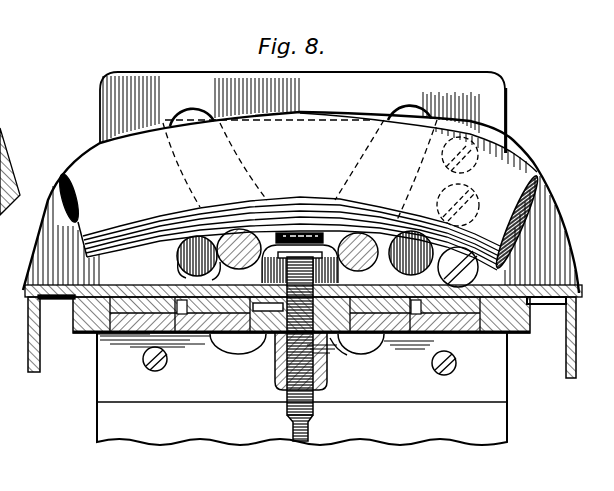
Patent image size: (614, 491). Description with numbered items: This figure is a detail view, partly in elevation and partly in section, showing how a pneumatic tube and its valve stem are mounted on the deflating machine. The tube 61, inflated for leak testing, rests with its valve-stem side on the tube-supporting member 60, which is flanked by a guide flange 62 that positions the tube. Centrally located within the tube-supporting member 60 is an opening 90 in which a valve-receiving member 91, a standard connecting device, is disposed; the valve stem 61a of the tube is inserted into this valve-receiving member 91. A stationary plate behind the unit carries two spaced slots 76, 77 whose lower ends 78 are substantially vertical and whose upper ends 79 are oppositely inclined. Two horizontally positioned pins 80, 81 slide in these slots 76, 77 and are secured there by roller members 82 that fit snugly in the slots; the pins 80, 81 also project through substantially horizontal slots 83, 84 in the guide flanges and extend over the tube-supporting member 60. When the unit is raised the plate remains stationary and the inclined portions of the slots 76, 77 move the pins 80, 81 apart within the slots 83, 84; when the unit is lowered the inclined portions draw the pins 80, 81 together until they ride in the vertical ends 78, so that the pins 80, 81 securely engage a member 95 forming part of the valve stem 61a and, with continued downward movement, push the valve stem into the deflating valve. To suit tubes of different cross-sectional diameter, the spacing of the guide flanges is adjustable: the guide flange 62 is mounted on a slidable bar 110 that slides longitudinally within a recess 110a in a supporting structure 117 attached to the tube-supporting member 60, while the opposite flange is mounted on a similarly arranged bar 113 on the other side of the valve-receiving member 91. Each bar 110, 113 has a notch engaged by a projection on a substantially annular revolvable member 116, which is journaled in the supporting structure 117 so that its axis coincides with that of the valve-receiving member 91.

The tube-supporting member 60 is at (490, 293).
The tube 61 is at (517, 182).
The valve stem 61a is at (317, 408).
The guide flange 62 is at (510, 162).
The slot 76 is at (205, 110).
The slot 77 is at (434, 112).
The lower end of slot 78 is at (237, 354).
The upper end of slot 79 is at (248, 163).
The pin 80 is at (197, 256).
The pin 81 is at (411, 253).
The roller member 82 is at (208, 270).
The slot 83 is at (176, 260).
The slot 84 is at (452, 270).
The opening 90 is at (347, 355).
The valve-receiving member 91 is at (282, 378).
The member of valve stem 95 is at (300, 232).
The slidable bar 110 is at (484, 338).
The recess 110a is at (566, 302).
The bar 113 is at (110, 342).
The revolvable member 116 is at (192, 335).
The supporting structure 117 is at (76, 318).